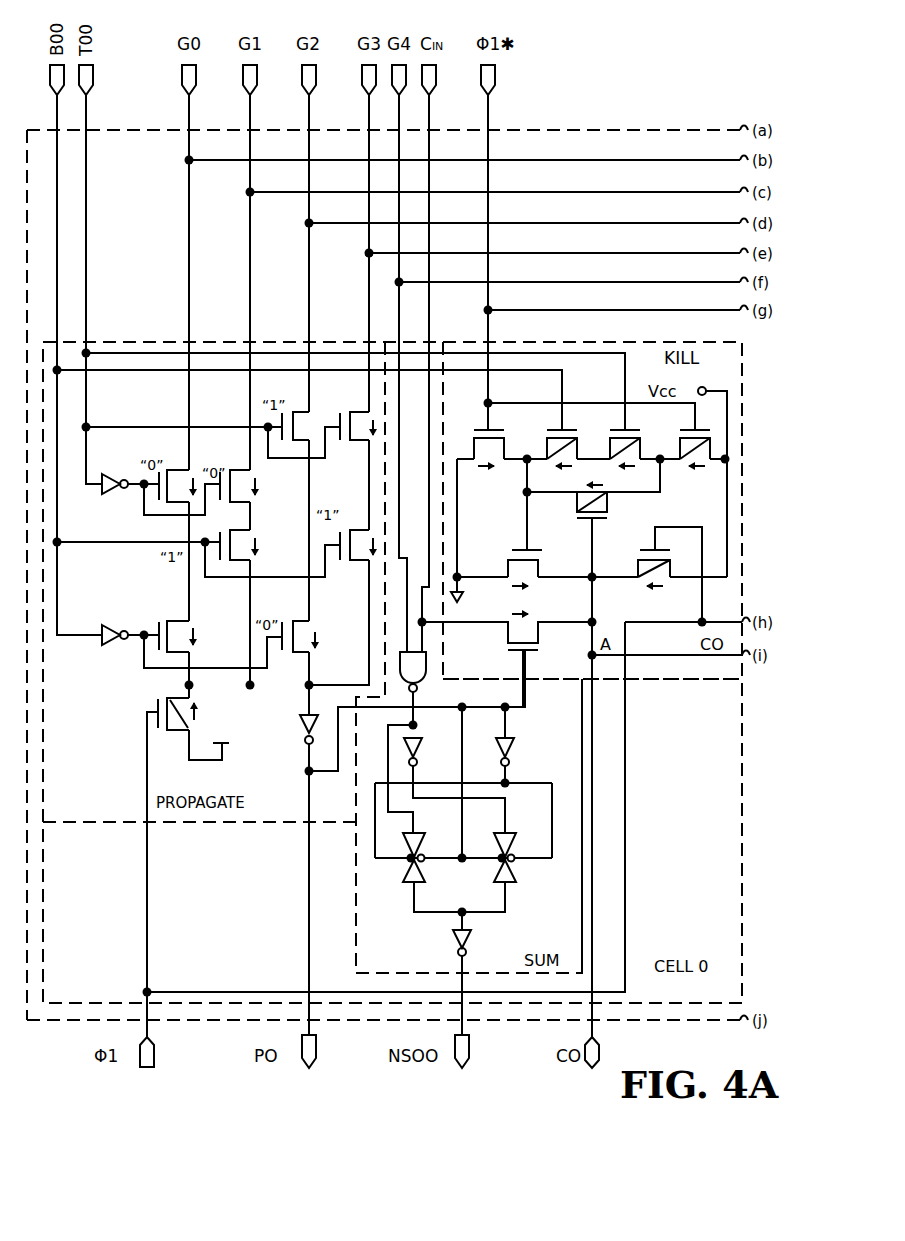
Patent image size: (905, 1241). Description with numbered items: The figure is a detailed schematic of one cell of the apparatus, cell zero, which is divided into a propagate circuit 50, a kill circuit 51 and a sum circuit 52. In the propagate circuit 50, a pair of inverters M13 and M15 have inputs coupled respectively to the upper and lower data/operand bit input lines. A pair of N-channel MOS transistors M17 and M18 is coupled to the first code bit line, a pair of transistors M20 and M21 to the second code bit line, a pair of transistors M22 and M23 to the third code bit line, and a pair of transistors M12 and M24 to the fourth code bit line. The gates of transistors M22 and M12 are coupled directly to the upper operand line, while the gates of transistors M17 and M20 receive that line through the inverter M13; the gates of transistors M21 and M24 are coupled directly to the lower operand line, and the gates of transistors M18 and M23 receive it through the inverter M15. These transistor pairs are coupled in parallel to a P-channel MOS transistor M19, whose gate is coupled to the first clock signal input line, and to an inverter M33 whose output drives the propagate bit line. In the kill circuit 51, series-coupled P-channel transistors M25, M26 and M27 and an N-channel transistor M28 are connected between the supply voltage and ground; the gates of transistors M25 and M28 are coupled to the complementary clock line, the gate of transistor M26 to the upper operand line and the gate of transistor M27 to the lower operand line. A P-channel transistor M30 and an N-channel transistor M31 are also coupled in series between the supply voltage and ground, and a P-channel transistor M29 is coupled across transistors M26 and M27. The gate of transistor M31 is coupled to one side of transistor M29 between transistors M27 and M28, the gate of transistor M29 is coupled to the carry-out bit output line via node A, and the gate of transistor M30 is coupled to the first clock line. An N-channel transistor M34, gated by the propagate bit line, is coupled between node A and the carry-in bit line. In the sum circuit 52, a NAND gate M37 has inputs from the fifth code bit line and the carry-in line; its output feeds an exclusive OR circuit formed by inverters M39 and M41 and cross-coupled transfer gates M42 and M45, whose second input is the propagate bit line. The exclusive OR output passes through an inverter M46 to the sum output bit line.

The N-channel MOS transistor M12 is at (358, 410).
The inverter M13 is at (127, 490).
The inverter M15 is at (120, 643).
The N-channel MOS transistor M17 is at (176, 470).
The N-channel MOS transistor M18 is at (188, 624).
The P-channel MOS transistor M19 is at (202, 726).
The N-channel MOS transistor M20 is at (240, 470).
The N-channel MOS transistor M21 is at (248, 533).
The N-channel MOS transistor M22 is at (296, 410).
The N-channel MOS transistor M23 is at (312, 622).
The N-channel MOS transistor M24 is at (354, 530).
The P-channel MOS transistor M25 is at (712, 462).
The P-channel MOS transistor M26 is at (642, 444).
The P-channel MOS transistor M27 is at (548, 428).
The N-channel MOS transistor M28 is at (500, 462).
The P-channel MOS transistor M29 is at (610, 510).
The P-channel MOS transistor M30 is at (634, 560).
The N-channel MOS transistor M31 is at (538, 572).
The inverter M33 is at (306, 732).
The N-channel MOS transistor M34 is at (508, 624).
The NAND gate M37 is at (420, 686).
The inverter M39 is at (420, 740).
The inverter M41 is at (512, 752).
The transfer gate M42 is at (402, 862).
The transfer gate M45 is at (516, 866).
The inverter M46 is at (452, 934).
The propagate circuit 50 is at (88, 822).
The kill circuit 51 is at (652, 681).
The sum circuit 52 is at (582, 842).